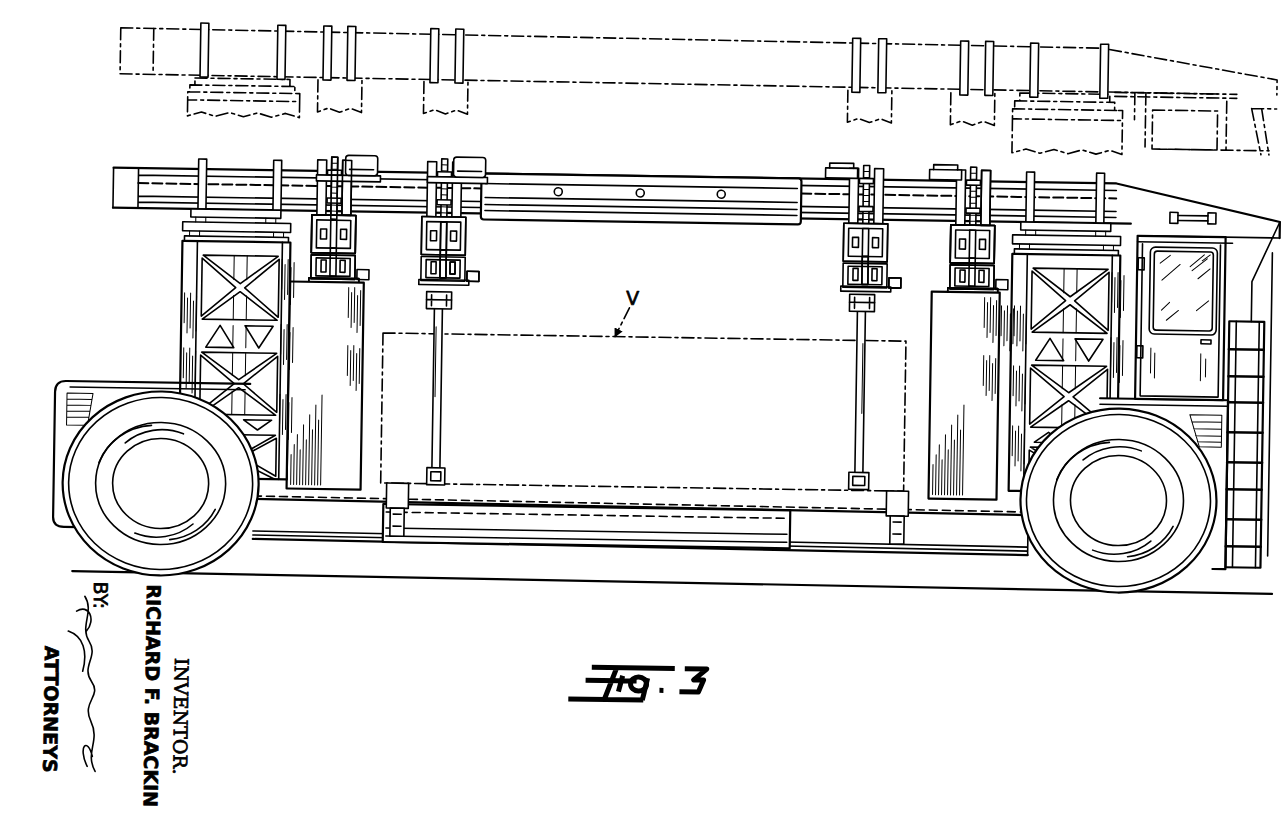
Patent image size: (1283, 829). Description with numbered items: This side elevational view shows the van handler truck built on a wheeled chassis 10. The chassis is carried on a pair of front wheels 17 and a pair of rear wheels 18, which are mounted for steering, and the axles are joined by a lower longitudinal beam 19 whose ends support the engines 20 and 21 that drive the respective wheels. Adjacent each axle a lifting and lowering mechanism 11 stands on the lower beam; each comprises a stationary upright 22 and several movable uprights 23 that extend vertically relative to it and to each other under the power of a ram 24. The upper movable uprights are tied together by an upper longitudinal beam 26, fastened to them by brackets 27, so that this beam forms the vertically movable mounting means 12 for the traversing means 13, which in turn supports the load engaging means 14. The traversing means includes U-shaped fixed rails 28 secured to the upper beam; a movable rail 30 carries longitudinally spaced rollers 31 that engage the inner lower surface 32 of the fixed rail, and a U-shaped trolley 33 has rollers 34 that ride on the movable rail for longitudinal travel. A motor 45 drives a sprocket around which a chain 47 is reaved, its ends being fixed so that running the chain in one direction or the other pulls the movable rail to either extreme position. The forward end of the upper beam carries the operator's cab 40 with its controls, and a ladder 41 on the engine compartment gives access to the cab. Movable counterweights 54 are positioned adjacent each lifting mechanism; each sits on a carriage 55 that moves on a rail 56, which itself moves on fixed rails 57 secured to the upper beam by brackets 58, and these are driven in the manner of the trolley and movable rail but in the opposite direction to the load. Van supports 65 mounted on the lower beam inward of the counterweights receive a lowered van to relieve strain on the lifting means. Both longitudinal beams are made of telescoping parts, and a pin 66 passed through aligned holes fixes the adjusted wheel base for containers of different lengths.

The wheeled chassis 10 is at (345, 550).
The lifting and lowering mechanism 11 is at (180, 280).
The mounting means 12 is at (512, 175).
The traversing means 13 is at (466, 241).
The load engaging means 14 is at (446, 330).
The front wheels 17 is at (1038, 553).
The rear wheels 18 is at (248, 556).
The lower longitudinal beam 19 is at (508, 550).
The engine 20 is at (1225, 452).
The engine 21 is at (105, 392).
The stationary upright 22 is at (186, 344).
The movable uprights 23 is at (182, 228).
The ram 24 is at (238, 326).
The upper longitudinal beam 26 is at (635, 220).
The brackets 27 is at (271, 166).
The U-shaped fixed rails 28 is at (311, 224).
The movable rail 30 is at (432, 263).
The rollers 31 is at (419, 243).
The inner lower surface 32 is at (465, 264).
The U-shaped trolley 33 is at (476, 281).
The rollers 34 is at (430, 283).
The operator's cab 40 is at (1215, 228).
The ladder 41 is at (1262, 314).
The motor 45 is at (359, 160).
The chain 47 is at (330, 162).
The movable counterweights 54 is at (362, 418).
The carriage 55 is at (322, 264).
The rail 56 is at (354, 262).
The fixed rails 57 is at (353, 235).
The brackets 58 is at (350, 194).
The van supports 65 is at (398, 487).
The pin 66 is at (719, 189).